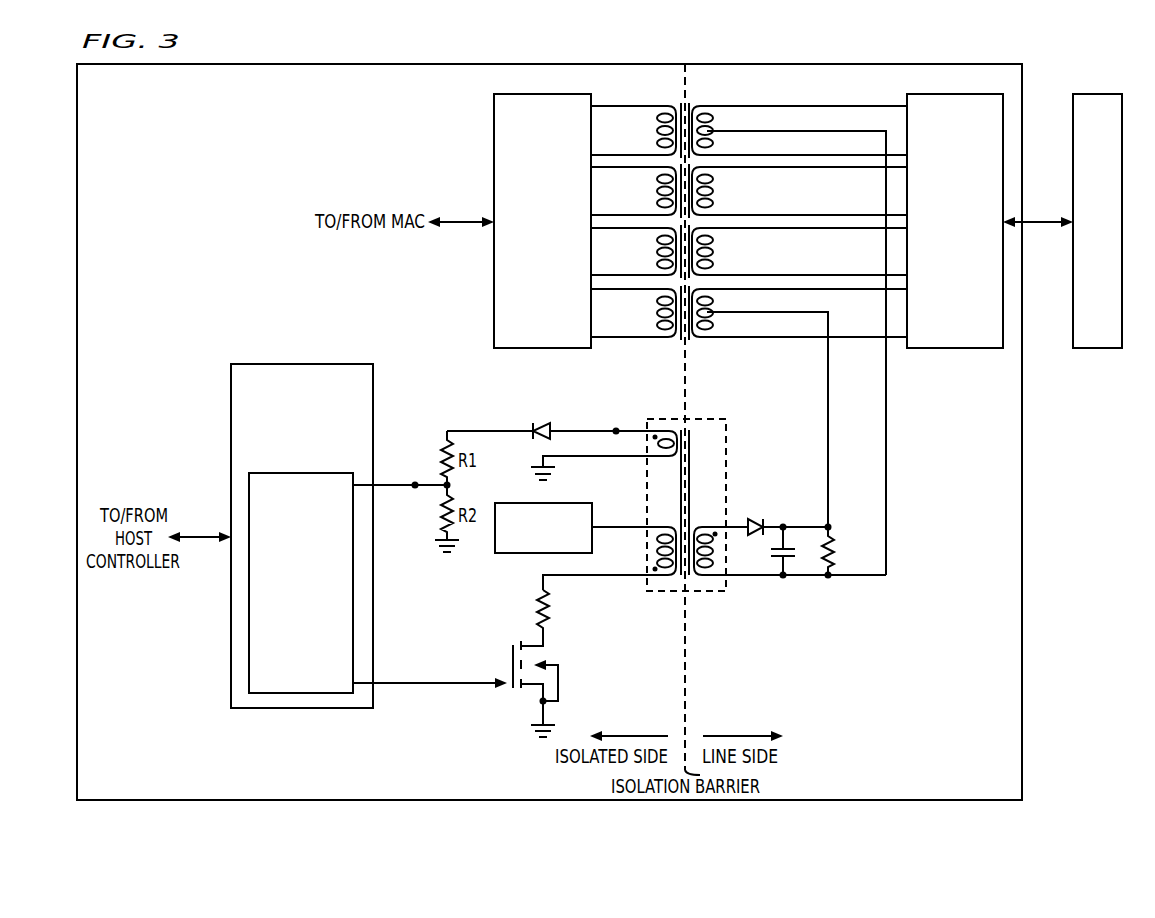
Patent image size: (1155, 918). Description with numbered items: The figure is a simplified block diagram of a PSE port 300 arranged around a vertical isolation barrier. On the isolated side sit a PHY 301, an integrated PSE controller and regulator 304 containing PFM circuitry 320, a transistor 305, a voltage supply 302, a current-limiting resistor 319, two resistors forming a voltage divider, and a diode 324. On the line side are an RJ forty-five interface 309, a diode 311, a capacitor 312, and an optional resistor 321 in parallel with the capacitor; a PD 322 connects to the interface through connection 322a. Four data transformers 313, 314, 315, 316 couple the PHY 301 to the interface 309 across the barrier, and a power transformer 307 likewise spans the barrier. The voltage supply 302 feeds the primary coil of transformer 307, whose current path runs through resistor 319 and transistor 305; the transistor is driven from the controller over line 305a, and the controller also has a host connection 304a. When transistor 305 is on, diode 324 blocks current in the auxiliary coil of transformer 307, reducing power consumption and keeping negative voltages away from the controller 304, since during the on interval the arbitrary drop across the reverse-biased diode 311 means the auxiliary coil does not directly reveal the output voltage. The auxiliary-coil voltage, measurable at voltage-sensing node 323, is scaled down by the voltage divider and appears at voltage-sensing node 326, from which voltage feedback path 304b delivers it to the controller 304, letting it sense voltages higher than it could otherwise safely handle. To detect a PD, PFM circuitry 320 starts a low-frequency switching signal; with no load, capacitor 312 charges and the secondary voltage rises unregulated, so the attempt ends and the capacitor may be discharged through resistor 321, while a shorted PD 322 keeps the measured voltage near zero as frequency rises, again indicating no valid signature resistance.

The PSE port 300 is at (1022, 766).
The PHY 301 is at (541, 94).
The voltage supply 302 is at (575, 503).
The integrated PSE controller and regulator 304 is at (330, 364).
The host controller interface 304a is at (200, 534).
The voltage feedback path 304b is at (399, 493).
The transistor 305 is at (508, 650).
The gate drive line 305a is at (403, 681).
The power transformer 307 is at (703, 419).
The RJ45 interface 309 is at (955, 94).
The diode 311 is at (755, 520).
The capacitor 312 is at (773, 549).
The transformer 313 is at (657, 131).
The transformer 314 is at (657, 191).
The transformer 315 is at (657, 252).
The transformer 316 is at (657, 313).
The current-limiting resistor 319 is at (555, 612).
The PFM circuitry 320 is at (310, 473).
The resistor 321 is at (836, 551).
The PD 322 is at (1085, 94).
The powered device interface 322a is at (1047, 216).
The voltage-sensing node 323 is at (616, 428).
The diode 324 is at (541, 424).
The voltage-sensing node 326 is at (415, 481).